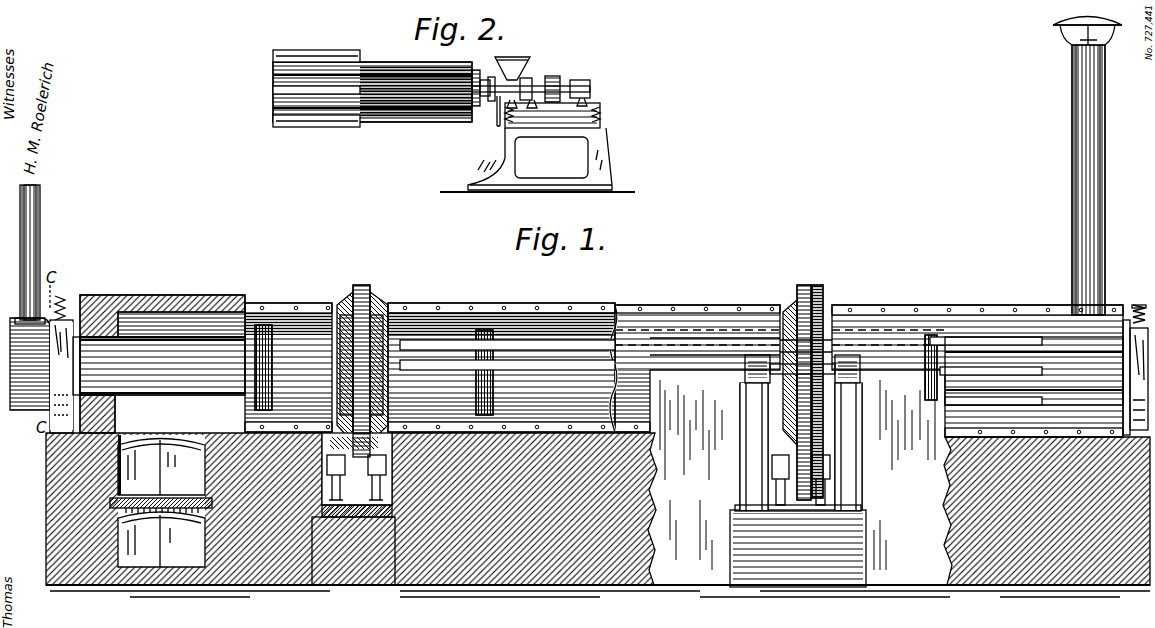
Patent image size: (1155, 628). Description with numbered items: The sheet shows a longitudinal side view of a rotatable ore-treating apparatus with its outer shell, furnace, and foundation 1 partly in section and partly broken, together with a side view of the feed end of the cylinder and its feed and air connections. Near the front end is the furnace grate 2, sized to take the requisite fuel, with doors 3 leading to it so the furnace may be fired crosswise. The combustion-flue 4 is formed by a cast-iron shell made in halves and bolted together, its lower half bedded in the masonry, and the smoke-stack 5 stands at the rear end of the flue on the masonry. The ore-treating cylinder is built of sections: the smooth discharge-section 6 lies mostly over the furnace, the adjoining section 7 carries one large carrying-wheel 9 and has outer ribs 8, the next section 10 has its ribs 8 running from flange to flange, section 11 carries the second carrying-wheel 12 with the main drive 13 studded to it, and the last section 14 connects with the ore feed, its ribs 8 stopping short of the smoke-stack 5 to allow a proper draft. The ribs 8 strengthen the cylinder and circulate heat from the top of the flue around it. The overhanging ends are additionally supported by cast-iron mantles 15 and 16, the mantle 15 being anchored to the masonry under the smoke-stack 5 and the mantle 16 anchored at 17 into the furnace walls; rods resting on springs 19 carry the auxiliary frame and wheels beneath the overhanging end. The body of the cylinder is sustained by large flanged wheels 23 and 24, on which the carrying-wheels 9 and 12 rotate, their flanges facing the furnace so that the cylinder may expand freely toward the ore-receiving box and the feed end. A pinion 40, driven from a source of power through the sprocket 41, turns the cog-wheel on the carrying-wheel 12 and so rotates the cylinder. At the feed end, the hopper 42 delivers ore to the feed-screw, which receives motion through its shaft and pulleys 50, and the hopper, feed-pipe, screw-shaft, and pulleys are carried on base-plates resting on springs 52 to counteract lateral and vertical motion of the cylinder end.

In FIG. 1, the base or foundation 1 is at (500, 575).
In FIG. 1, the grate 2 is at (195, 512).
In FIG. 1, the doors 3 is at (170, 442).
In FIG. 1, the combustion-flue 4 is at (553, 316).
In FIG. 1, the smoke-stack 5 is at (1072, 268).
In FIG. 1, the discharge-section 6 is at (135, 330).
In FIG. 1, the section 7 is at (445, 312).
In FIG. 2, the ribs 8 is at (304, 58).
In FIG. 1, the ribs 8 is at (430, 367).
In FIG. 1, the carrying-wheel 9 is at (370, 290).
In FIG. 1, the section 10 is at (590, 312).
In FIG. 1, the section 11 is at (718, 343).
In FIG. 1, the carrying-wheel 12 is at (804, 287).
In FIG. 1, the main drive 13 is at (823, 292).
In FIG. 2, the last section 14 is at (372, 96).
In FIG. 1, the last section 14 is at (976, 313).
In FIG. 1, the mantle 15 is at (1125, 361).
In FIG. 1, the mantle 16 is at (45, 309).
In FIG. 1, the anchor 17 is at (90, 326).
In FIG. 1, the springs 19 is at (1136, 312).
In FIG. 1, the flanged wheel 23 is at (365, 488).
In FIG. 1, the flanged wheel 24 is at (813, 500).
In FIG. 1, the pinion 40 is at (822, 350).
In FIG. 1, the sprocket 41 is at (796, 370).
In FIG. 2, the hopper 42 is at (520, 62).
In FIG. 2, the pulleys 50 is at (560, 86).
In FIG. 2, the springs 52 is at (600, 118).